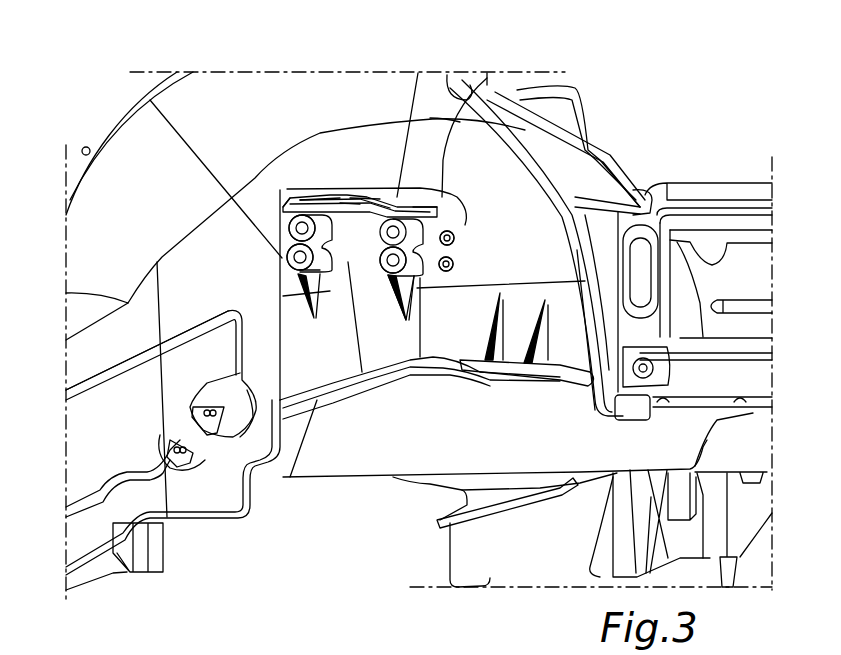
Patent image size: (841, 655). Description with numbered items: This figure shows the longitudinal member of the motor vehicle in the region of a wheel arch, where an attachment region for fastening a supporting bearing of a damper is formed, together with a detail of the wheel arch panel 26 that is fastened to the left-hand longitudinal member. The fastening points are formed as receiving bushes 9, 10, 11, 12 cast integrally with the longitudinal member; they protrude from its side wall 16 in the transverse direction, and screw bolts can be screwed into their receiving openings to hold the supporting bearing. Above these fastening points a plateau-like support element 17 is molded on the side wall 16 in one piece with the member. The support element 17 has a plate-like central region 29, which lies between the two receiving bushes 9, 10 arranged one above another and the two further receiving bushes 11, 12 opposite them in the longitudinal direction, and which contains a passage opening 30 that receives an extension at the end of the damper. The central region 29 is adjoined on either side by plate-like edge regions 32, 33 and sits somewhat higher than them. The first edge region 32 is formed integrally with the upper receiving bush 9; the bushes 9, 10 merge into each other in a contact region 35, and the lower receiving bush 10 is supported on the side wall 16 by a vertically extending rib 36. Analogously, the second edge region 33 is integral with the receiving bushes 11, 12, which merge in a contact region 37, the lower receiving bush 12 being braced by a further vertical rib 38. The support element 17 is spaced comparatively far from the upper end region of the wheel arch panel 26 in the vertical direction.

The receiving bush 9 is at (453, 236).
The receiving bush 10 is at (453, 262).
The receiving bush 11 is at (285, 224).
The receiving bush 12 is at (290, 258).
The side wall 16 is at (550, 262).
The support element 17 is at (322, 192).
The wheel arch panel 26 is at (437, 143).
The central region 29 is at (370, 197).
The passage opening 30 is at (353, 195).
The first edge region 32 is at (440, 200).
The second edge region 33 is at (302, 199).
The contact region 35 is at (380, 267).
The rib 36 is at (405, 312).
The contact region 37 is at (288, 243).
The rib 38 is at (292, 293).